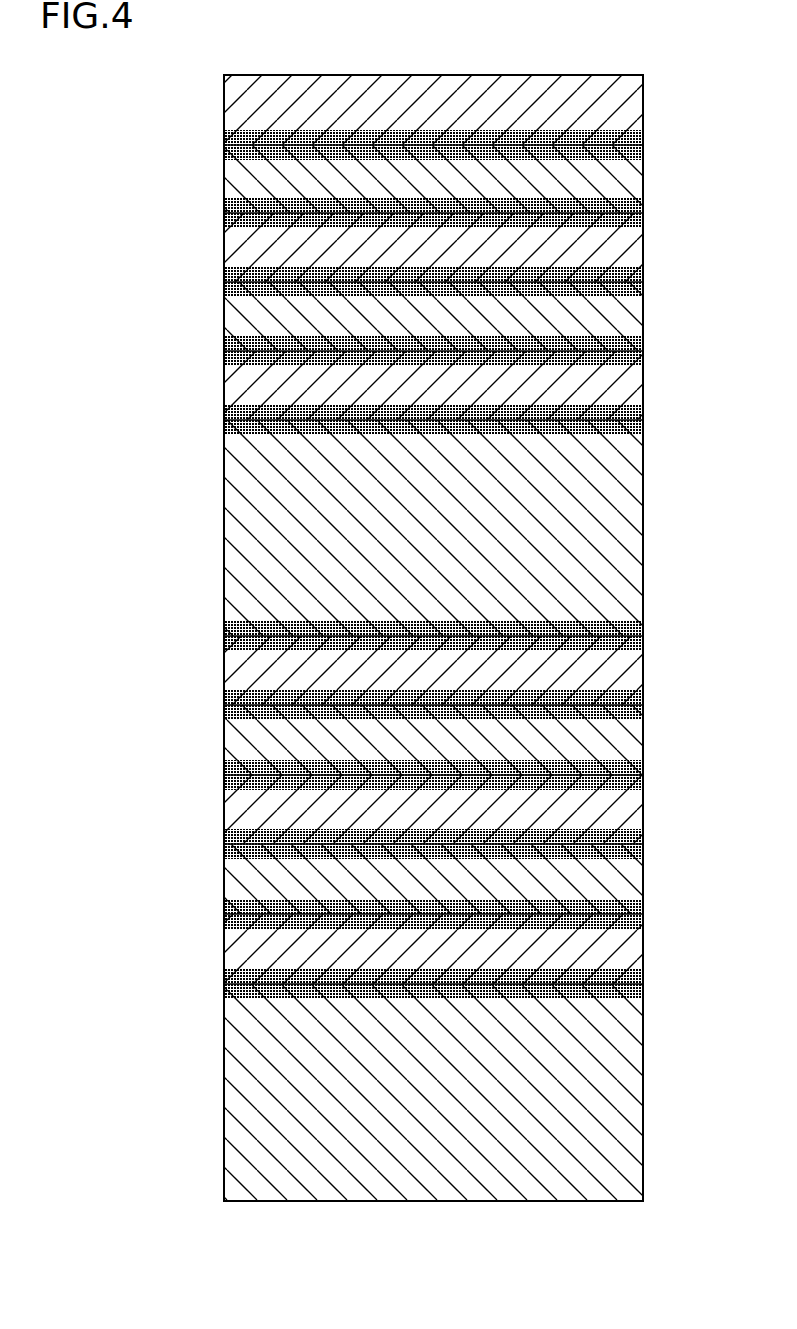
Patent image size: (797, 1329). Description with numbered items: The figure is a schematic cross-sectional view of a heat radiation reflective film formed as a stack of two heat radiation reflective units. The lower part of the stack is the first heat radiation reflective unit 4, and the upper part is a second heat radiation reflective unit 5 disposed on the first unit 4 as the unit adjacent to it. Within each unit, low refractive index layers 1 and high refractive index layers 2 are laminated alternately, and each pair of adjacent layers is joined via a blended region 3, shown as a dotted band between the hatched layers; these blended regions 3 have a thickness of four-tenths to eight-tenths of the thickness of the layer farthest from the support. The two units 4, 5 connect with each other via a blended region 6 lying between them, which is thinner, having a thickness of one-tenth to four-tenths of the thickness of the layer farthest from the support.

The low refractive index layer 1 is at (643, 181).
The high refractive index layer 2 is at (643, 110).
The blended region 3 is at (218, 130).
The heat radiation reflective unit 4 is at (706, 1127).
The heat radiation reflective unit 5 is at (706, 562).
The blended region 6 is at (218, 621).